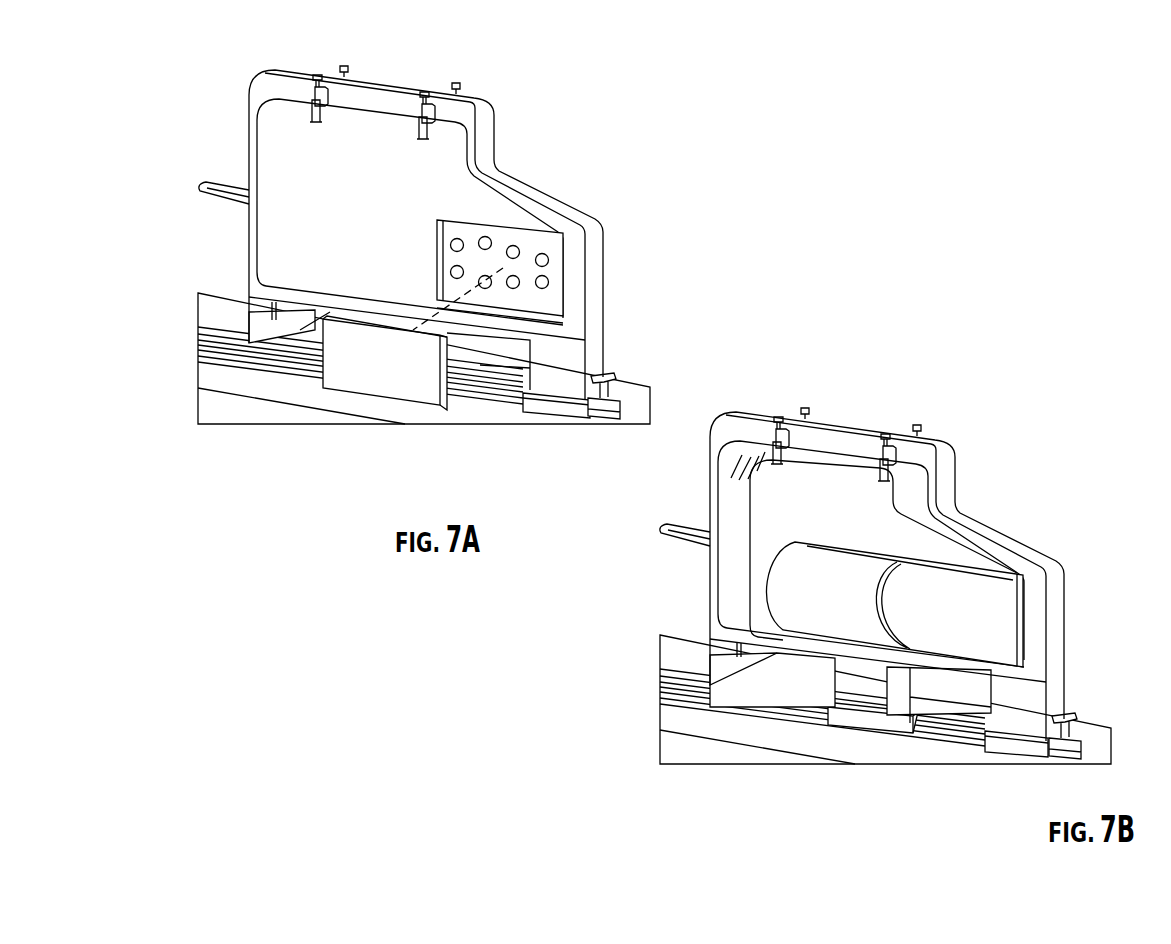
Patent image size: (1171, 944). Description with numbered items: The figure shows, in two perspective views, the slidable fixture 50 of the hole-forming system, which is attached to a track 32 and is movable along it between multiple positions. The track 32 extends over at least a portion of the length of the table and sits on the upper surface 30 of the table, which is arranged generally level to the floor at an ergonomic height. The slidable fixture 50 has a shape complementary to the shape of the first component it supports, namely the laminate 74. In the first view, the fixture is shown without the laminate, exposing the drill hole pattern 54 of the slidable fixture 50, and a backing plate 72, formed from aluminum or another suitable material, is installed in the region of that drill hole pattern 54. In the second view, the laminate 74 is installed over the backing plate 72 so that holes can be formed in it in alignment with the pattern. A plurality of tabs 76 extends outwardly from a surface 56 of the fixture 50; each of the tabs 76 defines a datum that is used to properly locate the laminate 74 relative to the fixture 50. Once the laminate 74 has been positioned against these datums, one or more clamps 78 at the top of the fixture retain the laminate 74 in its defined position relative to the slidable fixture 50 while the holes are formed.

In FIG. 7A, the upper surface 30 is at (223, 402).
In FIG. 7B, the upper surface 30 is at (686, 742).
In FIG. 7B, the track 32 is at (942, 733).
In FIG. 7A, the slidable fixture 50 is at (477, 255).
In FIG. 7B, the slidable fixture 50 is at (910, 590).
In FIG. 7A, the drill hole pattern 54 is at (507, 236).
In FIG. 7B, the surface 56 is at (940, 520).
In FIG. 7A, the backing plate 72 is at (381, 384).
In FIG. 7B, the laminate 74 is at (958, 553).
In FIG. 7A, the tabs 76 is at (472, 153).
In FIG. 7B, the tabs 76 is at (928, 494).
In FIG. 7A, the clamps 78 is at (420, 117).
In FIG. 7B, the clamps 78 is at (882, 460).